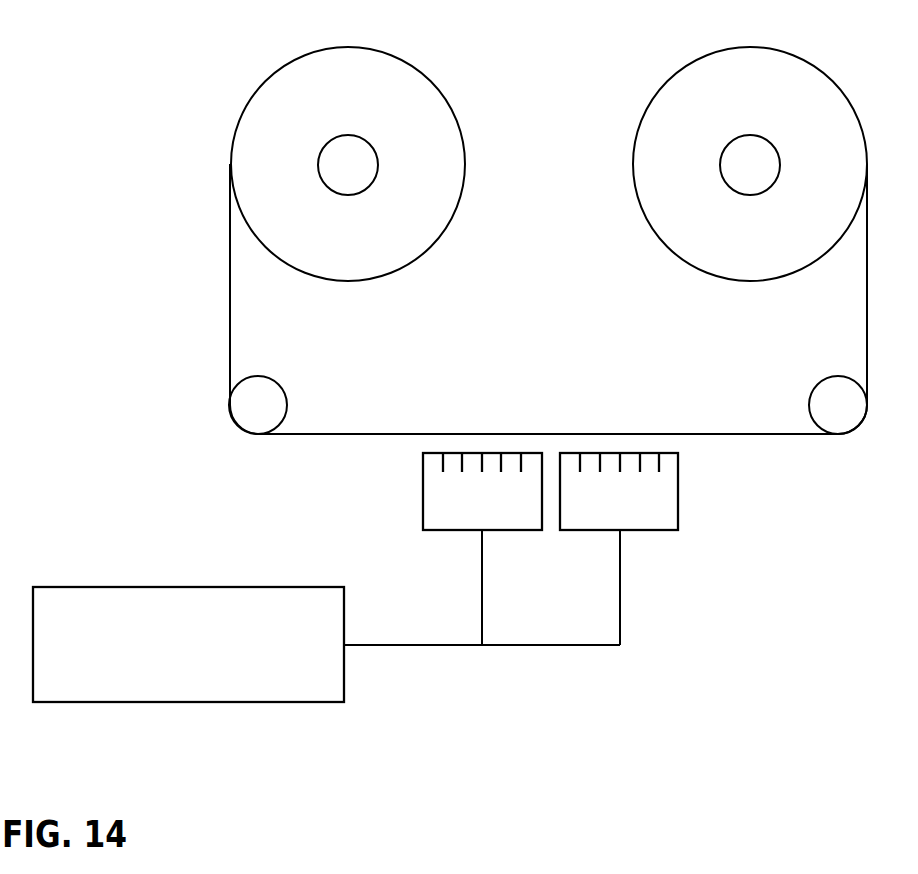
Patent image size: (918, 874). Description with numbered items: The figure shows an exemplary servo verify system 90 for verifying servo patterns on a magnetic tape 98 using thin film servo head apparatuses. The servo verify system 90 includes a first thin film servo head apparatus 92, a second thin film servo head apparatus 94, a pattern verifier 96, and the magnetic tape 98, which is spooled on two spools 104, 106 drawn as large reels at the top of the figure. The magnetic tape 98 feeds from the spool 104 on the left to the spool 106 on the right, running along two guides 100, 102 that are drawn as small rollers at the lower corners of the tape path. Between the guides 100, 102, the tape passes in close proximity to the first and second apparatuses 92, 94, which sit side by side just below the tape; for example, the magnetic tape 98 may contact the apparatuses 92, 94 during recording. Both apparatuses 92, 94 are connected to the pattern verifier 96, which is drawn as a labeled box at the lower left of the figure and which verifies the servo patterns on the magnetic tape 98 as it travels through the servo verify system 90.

The servo verify system 90 is at (132, 107).
The first thin film servo head apparatus 92 is at (403, 472).
The second thin film servo head apparatus 94 is at (697, 473).
The pattern verifier 96 is at (174, 672).
The magnetic tape 98 is at (230, 328).
The guide 100 is at (288, 400).
The guide 102 is at (808, 400).
The spool 104 is at (467, 165).
The spool 106 is at (632, 165).